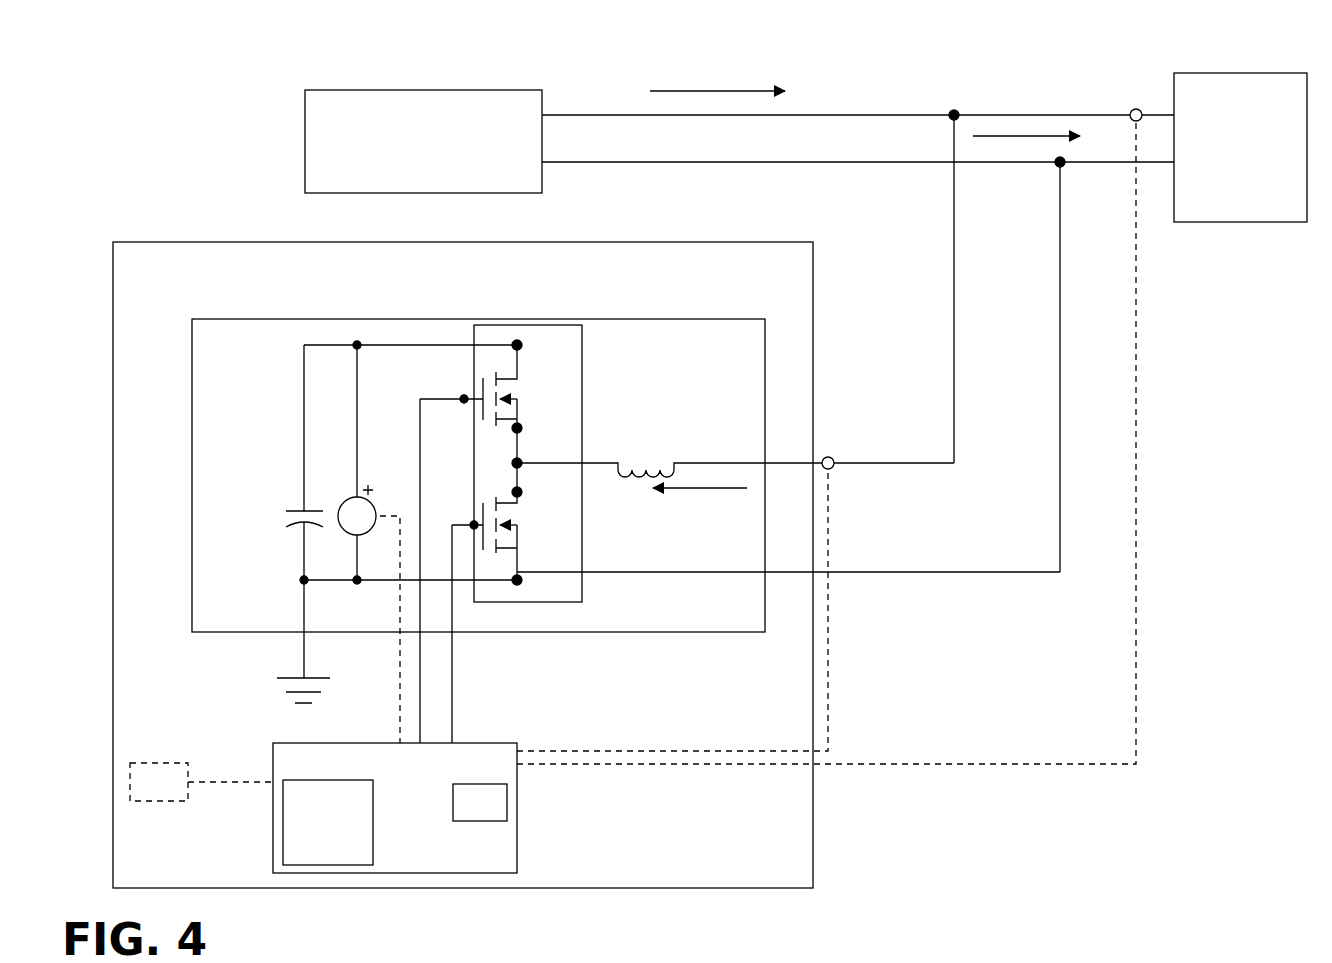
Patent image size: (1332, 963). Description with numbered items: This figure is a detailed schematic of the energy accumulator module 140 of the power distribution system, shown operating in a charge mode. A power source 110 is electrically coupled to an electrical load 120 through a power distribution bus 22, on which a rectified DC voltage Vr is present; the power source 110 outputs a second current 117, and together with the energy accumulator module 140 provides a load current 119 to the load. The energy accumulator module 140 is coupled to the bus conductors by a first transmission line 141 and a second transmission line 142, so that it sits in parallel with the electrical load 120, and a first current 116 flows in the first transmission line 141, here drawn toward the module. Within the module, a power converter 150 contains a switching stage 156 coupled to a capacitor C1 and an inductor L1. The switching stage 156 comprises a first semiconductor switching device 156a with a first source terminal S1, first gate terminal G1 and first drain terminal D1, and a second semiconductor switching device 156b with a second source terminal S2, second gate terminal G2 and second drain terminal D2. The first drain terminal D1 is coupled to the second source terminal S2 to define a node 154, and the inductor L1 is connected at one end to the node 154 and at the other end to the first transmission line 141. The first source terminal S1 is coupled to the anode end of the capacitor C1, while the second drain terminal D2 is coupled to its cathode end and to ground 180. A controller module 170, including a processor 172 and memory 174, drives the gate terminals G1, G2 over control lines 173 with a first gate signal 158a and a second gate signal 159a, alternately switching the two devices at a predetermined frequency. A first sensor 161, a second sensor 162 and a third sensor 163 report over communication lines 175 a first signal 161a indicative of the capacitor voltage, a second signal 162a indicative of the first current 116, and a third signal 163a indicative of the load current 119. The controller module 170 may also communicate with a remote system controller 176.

The power source 110 is at (423, 141).
The electrical load 120 is at (1240, 147).
The power distribution bus 22 is at (876, 114).
The second current 117 is at (715, 90).
The load current 119 is at (1037, 135).
The rectified DC voltage Vr is at (1057, 112).
The third sensor 163 is at (1140, 108).
The second sensor 162 is at (830, 456).
The first transmission line 141 is at (954, 292).
The second transmission line 142 is at (1060, 292).
The energy accumulator module 140 is at (270, 240).
The power converter 150 is at (455, 318).
The switching stage 156 is at (582, 368).
The first semiconductor switching device 156a is at (472, 380).
The second semiconductor switching device 156b is at (550, 561).
The node 154 is at (522, 463).
The inductor L1 is at (640, 455).
The capacitor C1 is at (280, 510).
The first sensor 161 is at (357, 496).
The first signal 161a is at (396, 700).
The first gate signal 158a is at (419, 399).
The second gate signal 159a is at (462, 656).
The control lines 173 is at (420, 468).
The communication lines 175 is at (392, 677).
The first current 116 is at (682, 490).
The second signal 162a is at (846, 746).
The third signal 163a is at (1016, 768).
The controller module 170 is at (395, 808).
The processor 172 is at (480, 802).
The memory 174 is at (328, 822).
The system controller 176 is at (201, 782).
The ground 180 is at (291, 713).
The first source terminal S1 is at (526, 344).
The first gate terminal G1 is at (462, 406).
The first drain terminal D1 is at (509, 436).
The second source terminal S2 is at (526, 492).
The second gate terminal G2 is at (471, 519).
The second drain terminal D2 is at (518, 590).